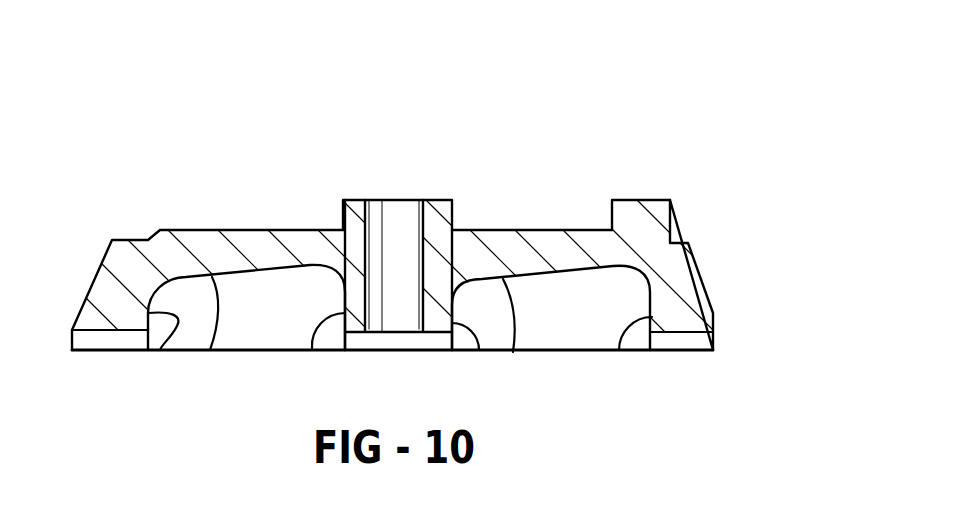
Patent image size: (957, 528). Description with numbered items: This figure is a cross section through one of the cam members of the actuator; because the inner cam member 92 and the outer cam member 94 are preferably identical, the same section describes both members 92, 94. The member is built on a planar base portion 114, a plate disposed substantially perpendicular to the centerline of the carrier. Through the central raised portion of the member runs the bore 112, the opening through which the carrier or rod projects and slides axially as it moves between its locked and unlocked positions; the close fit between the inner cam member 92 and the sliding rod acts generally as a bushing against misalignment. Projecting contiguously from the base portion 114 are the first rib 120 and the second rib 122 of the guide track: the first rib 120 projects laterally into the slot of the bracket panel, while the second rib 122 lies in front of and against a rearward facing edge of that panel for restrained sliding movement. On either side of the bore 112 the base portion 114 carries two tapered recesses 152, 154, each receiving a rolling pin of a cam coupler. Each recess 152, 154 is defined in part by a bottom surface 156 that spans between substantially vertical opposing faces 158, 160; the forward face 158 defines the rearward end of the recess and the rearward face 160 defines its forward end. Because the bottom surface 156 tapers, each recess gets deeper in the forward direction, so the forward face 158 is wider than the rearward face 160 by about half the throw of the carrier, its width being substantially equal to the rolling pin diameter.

The inner cam member 92 is at (429, 225).
The outer cam member 94 is at (668, 146).
The bore 112 is at (402, 222).
The base portion 114 is at (248, 247).
The first rib 120 is at (437, 200).
The second rib 122 is at (642, 200).
The tapered recess 152 is at (265, 320).
The tapered recess 154 is at (575, 320).
The bottom surface 156 is at (210, 350).
The forward face 158 is at (312, 348).
The rearward face 160 is at (160, 350).